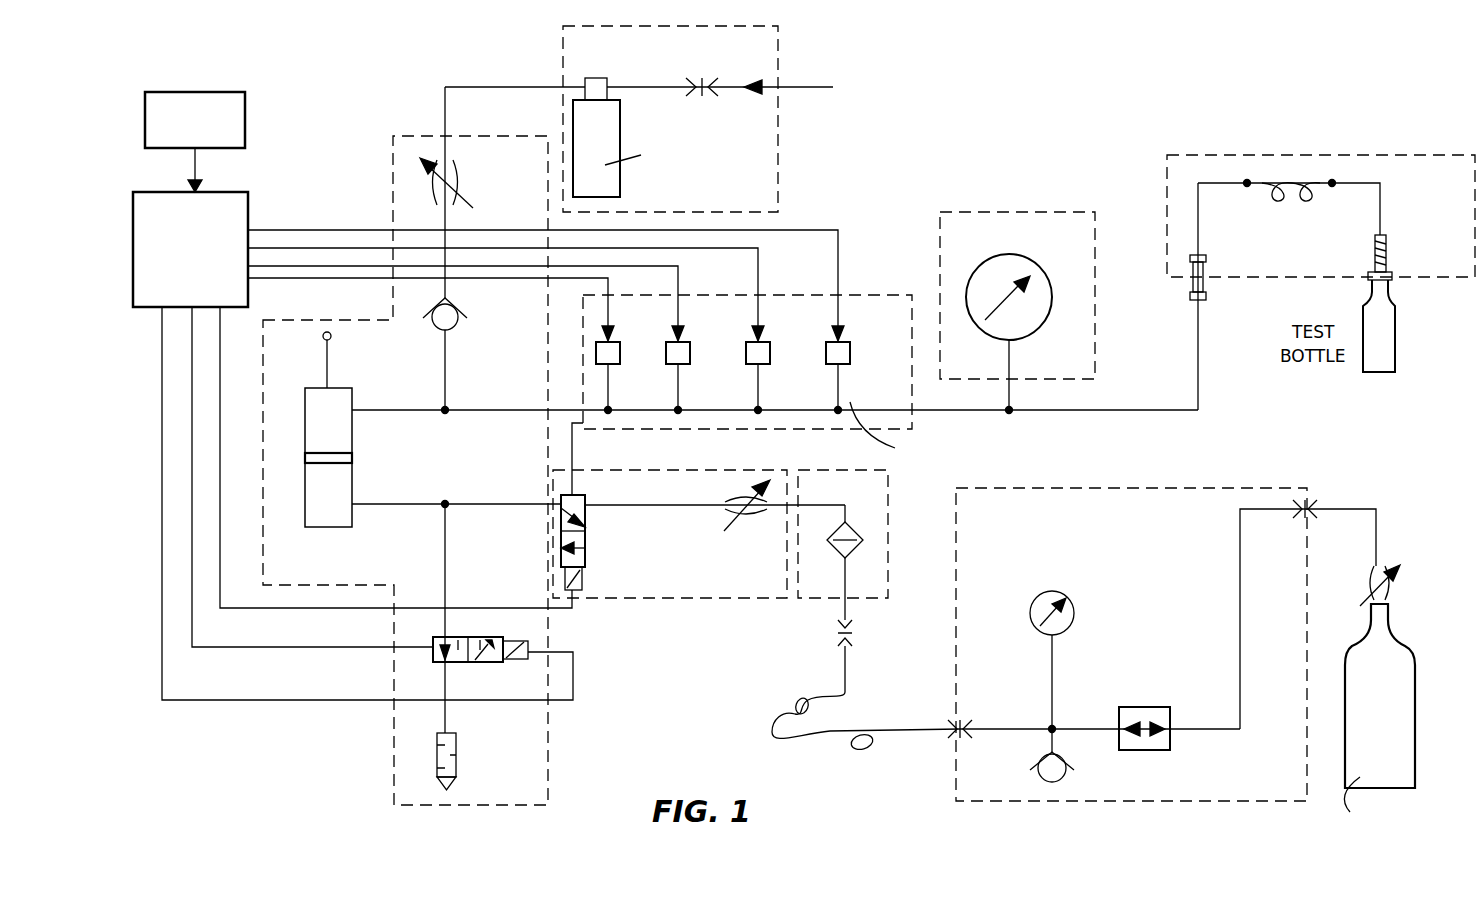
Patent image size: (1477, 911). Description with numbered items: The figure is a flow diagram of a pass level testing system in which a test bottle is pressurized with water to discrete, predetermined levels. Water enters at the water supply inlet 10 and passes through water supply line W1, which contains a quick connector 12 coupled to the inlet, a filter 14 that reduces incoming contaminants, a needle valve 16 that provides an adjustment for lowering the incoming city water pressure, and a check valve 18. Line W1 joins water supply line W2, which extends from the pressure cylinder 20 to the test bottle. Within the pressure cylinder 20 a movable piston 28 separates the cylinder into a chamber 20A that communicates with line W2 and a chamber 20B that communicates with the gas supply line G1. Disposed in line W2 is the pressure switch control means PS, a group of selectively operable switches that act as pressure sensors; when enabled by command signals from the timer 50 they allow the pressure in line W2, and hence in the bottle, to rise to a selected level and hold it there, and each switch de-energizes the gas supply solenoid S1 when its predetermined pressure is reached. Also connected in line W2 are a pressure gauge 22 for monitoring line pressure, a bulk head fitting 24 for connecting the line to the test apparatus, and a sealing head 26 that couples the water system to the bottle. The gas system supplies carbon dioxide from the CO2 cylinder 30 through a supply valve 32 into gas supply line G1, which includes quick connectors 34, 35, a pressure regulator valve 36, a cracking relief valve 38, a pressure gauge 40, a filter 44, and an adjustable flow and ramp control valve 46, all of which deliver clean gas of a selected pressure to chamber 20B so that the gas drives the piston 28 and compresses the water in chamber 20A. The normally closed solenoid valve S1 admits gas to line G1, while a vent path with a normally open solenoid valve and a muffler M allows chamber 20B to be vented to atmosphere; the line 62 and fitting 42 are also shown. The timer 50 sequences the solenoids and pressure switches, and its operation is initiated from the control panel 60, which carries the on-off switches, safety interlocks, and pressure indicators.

The water supply inlet 10 is at (778, 46).
The quick connector 12 is at (703, 100).
The filter 14 is at (618, 144).
The needle valve 16 is at (433, 190).
The check valve 18 is at (436, 308).
The pressure cylinder 20 is at (348, 443).
The chamber 20A is at (311, 405).
The chamber 20B is at (330, 507).
The pressure gauge 22 is at (1048, 318).
The bulk head fitting 24 is at (1204, 298).
The sealing head 26 is at (1393, 254).
The piston 28 is at (352, 458).
The CO2 cylinder 30 is at (1396, 633).
The supply valve 32 is at (490, 664).
The quick connector 34 is at (1314, 506).
The quick connector 35 is at (961, 722).
The pressure regulator valve 36 is at (1170, 752).
The cracking relief valve 38 is at (1062, 782).
The pressure gauge 40 is at (1072, 608).
The fitting 42 is at (838, 636).
The filter 44 is at (864, 542).
The adjustable flow and ramp control valve 46 is at (744, 502).
The timer 50 is at (248, 216).
The control panel 60 is at (245, 104).
The air line 62 is at (445, 553).
The water supply line W1 is at (652, 88).
The water supply line W2 is at (487, 413).
The normally closed solenoid valve S1 is at (612, 546).
The gas supply line G1 is at (1378, 546).
The muffler M is at (457, 765).
The pressure switch control means PS is at (886, 293).